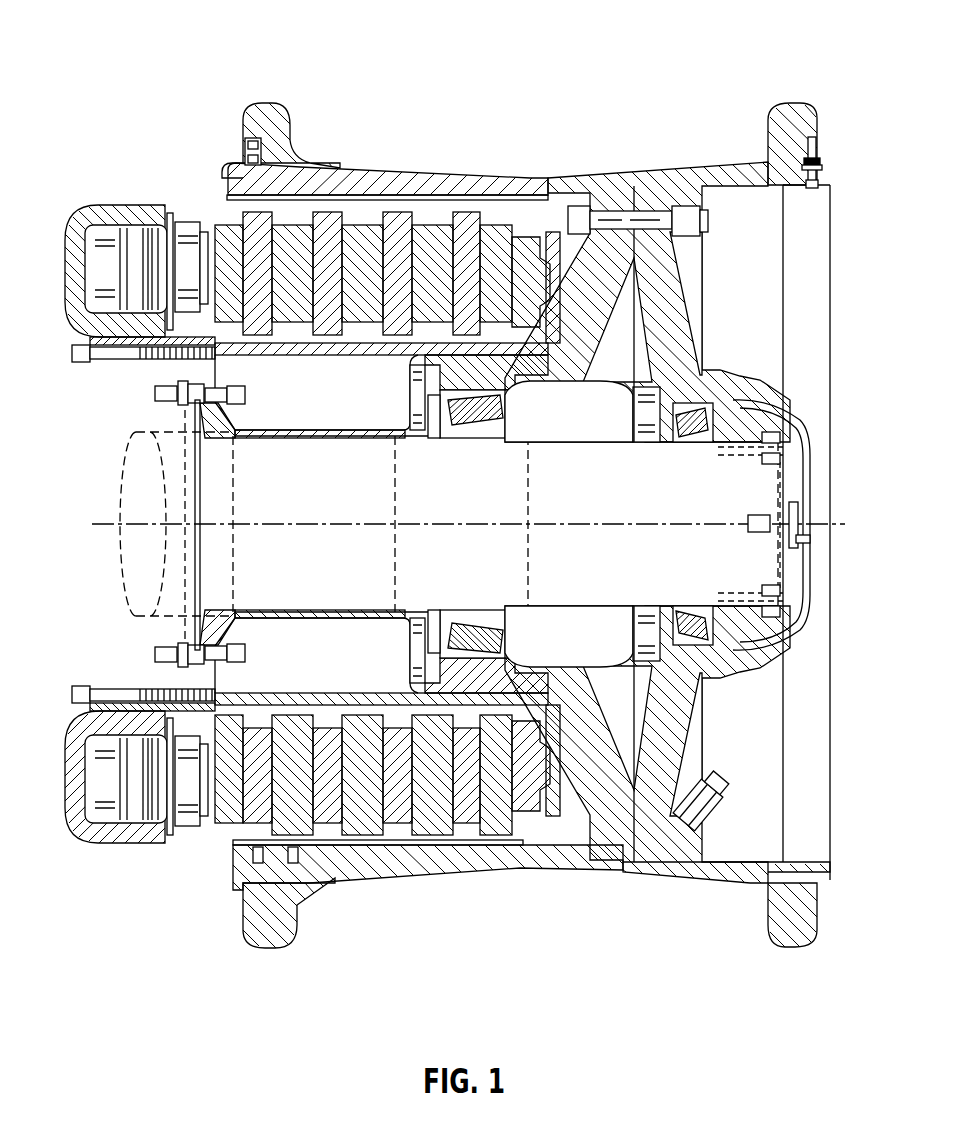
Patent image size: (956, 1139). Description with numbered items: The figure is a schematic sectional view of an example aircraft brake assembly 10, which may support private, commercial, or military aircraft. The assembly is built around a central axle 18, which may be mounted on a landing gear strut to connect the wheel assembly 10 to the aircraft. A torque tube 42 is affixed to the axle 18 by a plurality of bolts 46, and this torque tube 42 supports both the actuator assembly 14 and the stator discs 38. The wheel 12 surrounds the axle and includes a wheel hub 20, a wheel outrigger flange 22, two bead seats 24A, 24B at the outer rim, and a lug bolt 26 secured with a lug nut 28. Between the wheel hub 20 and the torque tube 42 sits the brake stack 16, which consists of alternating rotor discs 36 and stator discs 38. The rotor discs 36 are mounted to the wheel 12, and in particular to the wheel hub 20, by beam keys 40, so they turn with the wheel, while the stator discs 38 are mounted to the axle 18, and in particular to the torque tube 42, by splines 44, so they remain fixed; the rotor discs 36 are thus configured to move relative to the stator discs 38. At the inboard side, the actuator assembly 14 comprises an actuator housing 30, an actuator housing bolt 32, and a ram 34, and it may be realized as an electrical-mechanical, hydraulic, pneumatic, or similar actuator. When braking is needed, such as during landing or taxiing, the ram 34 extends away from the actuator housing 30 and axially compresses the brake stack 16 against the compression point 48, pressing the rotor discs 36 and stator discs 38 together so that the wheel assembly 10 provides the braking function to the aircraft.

The aircraft brake assembly 10 is at (650, 56).
The wheel 12 is at (667, 520).
The actuator assembly 14 is at (121, 270).
The brake stack 16 is at (200, 856).
The axle 18 is at (478, 495).
The wheel hub 20 is at (446, 178).
The wheel outrigger flange 22 is at (697, 176).
The bead seat 24A is at (775, 130).
The bead seat 24B is at (290, 122).
The lug bolt 26 is at (650, 206).
The lug nut 28 is at (710, 220).
The actuator housing 30 is at (70, 268).
The actuator housing bolt 32 is at (80, 356).
The ram 34 is at (220, 248).
The rotor discs 36 is at (327, 830).
The stator discs 38 is at (357, 810).
The beam keys 40 is at (490, 840).
The torque tube 42 is at (310, 352).
The splines 44 is at (322, 715).
The bolts 46 is at (178, 660).
The compression point 48 is at (522, 248).